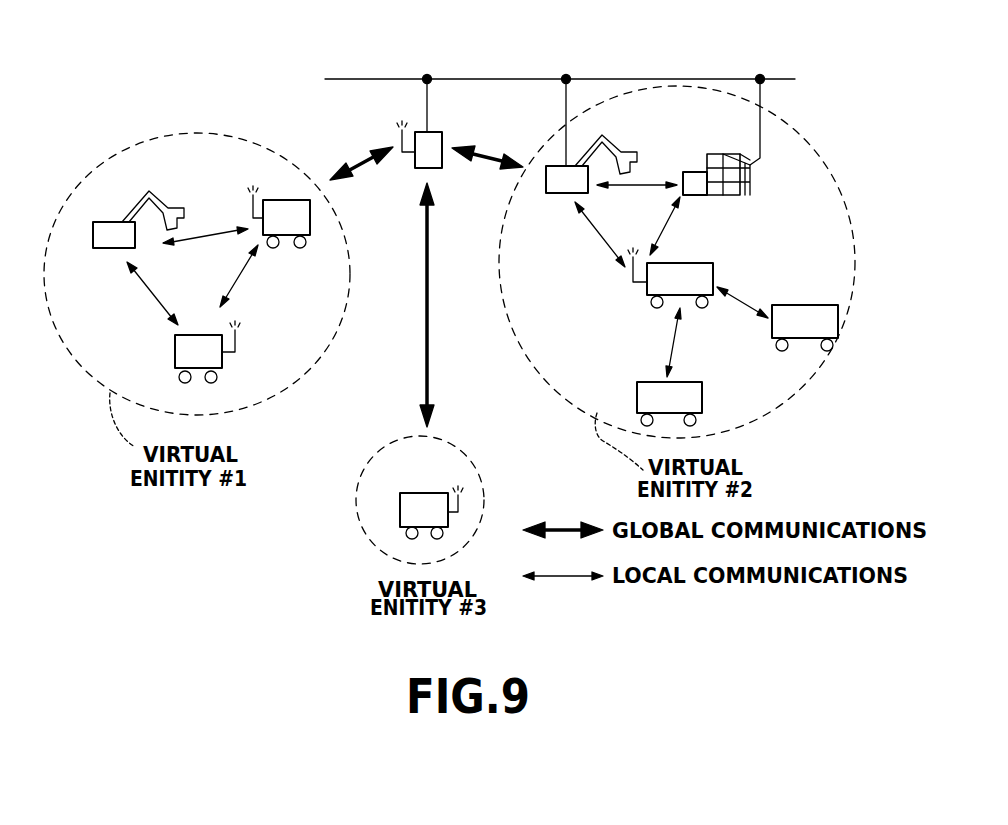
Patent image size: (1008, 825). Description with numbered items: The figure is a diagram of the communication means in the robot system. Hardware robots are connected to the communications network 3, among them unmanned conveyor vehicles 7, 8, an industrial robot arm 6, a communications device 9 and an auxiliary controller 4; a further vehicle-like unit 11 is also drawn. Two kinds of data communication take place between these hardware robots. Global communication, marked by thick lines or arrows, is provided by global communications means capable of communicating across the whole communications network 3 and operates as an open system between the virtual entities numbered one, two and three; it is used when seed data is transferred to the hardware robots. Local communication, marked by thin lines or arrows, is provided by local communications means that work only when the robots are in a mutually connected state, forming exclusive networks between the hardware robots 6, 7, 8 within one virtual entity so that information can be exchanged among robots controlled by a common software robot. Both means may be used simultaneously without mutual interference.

The communications network 3 is at (487, 79).
The auxiliary controller 4 is at (720, 154).
The industrial robot arm 6 is at (103, 222).
The unmanned conveyor vehicle 7 is at (175, 360).
The unmanned conveyor vehicle 8 is at (310, 225).
The communications device 9 is at (441, 133).
The transport cart 11 is at (804, 305).